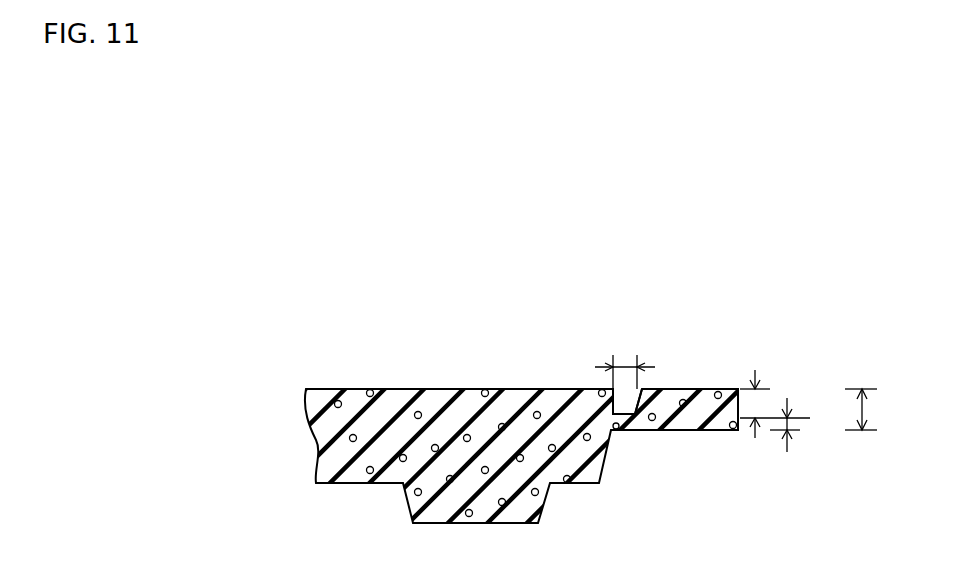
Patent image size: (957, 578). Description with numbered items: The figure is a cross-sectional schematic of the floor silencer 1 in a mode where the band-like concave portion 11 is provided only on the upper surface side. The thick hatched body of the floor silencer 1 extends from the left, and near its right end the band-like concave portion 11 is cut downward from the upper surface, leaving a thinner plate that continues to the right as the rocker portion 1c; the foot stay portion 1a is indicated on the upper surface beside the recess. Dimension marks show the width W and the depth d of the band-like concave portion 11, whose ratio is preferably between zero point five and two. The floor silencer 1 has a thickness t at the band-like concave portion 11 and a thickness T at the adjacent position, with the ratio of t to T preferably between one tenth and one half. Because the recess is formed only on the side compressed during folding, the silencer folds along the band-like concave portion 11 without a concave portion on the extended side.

The floor silencer 1 is at (494, 383).
The foot stay portion 1a is at (565, 389).
The rocker portion 1c is at (694, 389).
The band-like concave portion 11 is at (623, 415).
The width of the band-like concave portion W is at (623, 362).
The depth of the band-like concave portion d is at (775, 404).
The thickness at the band-like concave portion t is at (793, 427).
The thickness adjacent to the band-like concave portion T is at (868, 409).